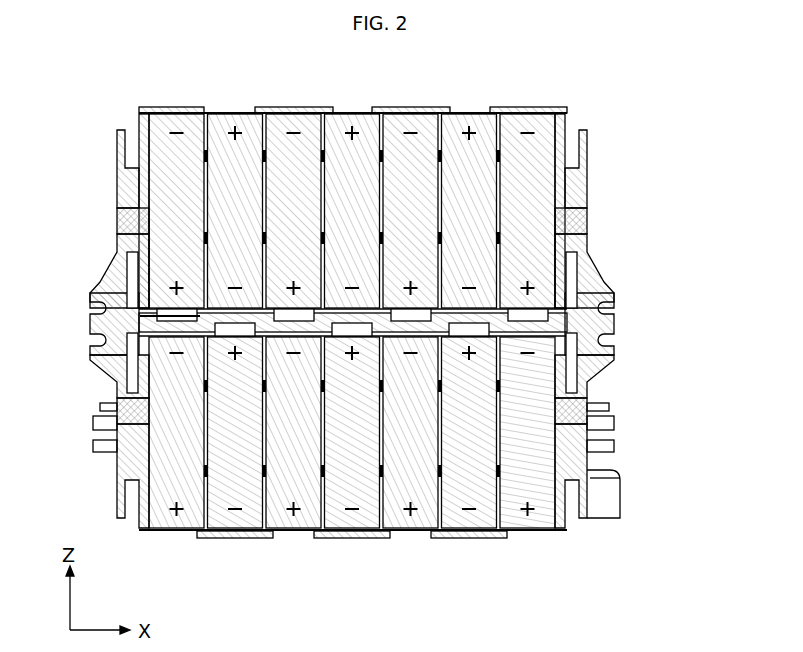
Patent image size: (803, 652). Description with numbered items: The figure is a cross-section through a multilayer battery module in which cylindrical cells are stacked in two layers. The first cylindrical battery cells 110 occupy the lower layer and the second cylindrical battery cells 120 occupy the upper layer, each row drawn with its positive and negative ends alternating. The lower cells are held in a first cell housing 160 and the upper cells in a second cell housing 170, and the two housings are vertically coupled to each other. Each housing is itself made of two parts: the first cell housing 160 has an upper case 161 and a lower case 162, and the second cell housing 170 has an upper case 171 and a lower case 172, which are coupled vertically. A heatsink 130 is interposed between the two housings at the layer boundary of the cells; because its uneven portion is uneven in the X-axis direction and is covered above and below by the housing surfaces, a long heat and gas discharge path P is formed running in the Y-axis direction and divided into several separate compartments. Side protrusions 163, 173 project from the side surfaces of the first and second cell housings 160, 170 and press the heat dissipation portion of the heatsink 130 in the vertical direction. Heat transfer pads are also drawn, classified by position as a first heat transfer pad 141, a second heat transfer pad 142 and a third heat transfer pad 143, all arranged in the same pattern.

The first cylindrical battery cell 110 is at (252, 527).
The second cylindrical battery cell 120 is at (228, 120).
The heatsink 130 is at (618, 323).
The first heat transfer pad 141 is at (222, 303).
The second heat transfer pad 142 is at (287, 107).
The third heat transfer pad 143 is at (222, 540).
The first cell housing 160 is at (404, 441).
The upper case 161 is at (583, 452).
The lower case 162 is at (583, 415).
The side protrusion 163 is at (598, 370).
The second cell housing 170 is at (404, 211).
The upper case 171 is at (585, 197).
The lower case 172 is at (585, 230).
The side protrusion 173 is at (597, 272).
The heat and gas discharge path P is at (168, 320).